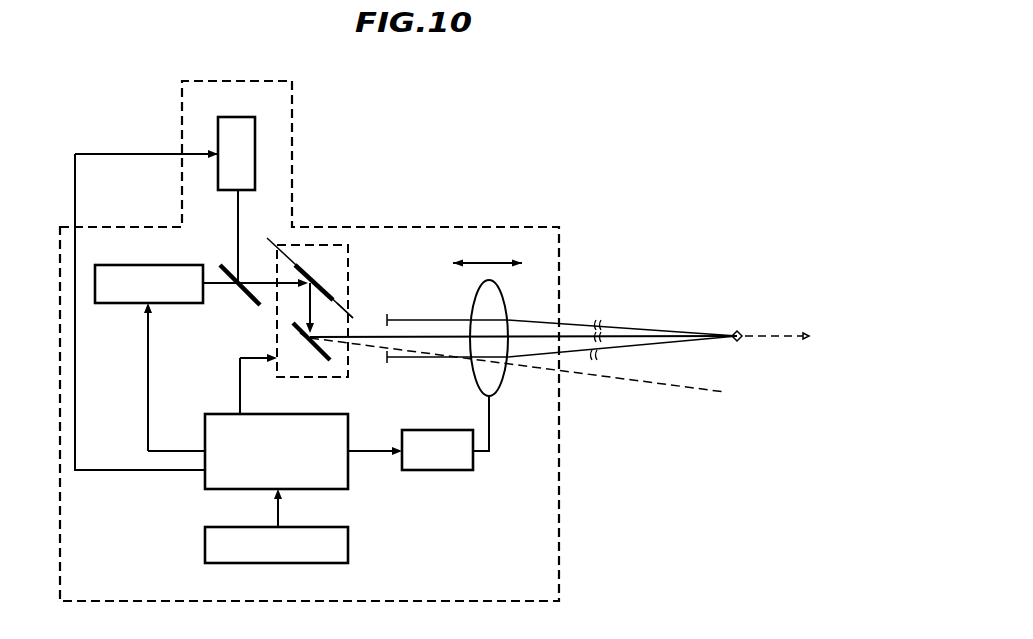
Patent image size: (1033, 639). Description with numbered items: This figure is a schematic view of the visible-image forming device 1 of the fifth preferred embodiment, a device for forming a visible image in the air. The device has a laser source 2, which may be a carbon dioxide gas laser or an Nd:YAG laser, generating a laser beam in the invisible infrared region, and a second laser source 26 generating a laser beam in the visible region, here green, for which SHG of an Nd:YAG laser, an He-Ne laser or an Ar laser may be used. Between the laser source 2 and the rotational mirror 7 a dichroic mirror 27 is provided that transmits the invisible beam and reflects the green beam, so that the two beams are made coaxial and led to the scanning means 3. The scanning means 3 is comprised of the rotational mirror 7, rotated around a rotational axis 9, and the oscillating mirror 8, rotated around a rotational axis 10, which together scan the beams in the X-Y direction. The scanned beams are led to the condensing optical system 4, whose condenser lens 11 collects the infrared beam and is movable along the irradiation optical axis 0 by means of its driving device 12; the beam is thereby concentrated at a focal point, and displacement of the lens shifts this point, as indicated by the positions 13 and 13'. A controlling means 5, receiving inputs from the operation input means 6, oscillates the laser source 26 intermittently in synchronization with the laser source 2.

The irradiation optical axis 0 is at (428, 336).
The visible-image forming device 1 is at (437, 227).
The laser source 2 is at (111, 303).
The scanning means 3 is at (346, 245).
The condensing optical system 4 is at (545, 276).
The controlling means 5 is at (348, 470).
The operation input means 6 is at (348, 545).
The rotational mirror 7 is at (301, 263).
The oscillating mirror 8 is at (322, 352).
The rotational axis 9 is at (345, 303).
The rotational axis 10 is at (303, 340).
The condenser lens 11 is at (500, 379).
The driving device 12 is at (452, 470).
The focal point 13 is at (721, 318).
The displaced focal point 13' is at (777, 317).
The laser source 26 is at (250, 173).
The dichroic mirror 27 is at (247, 295).